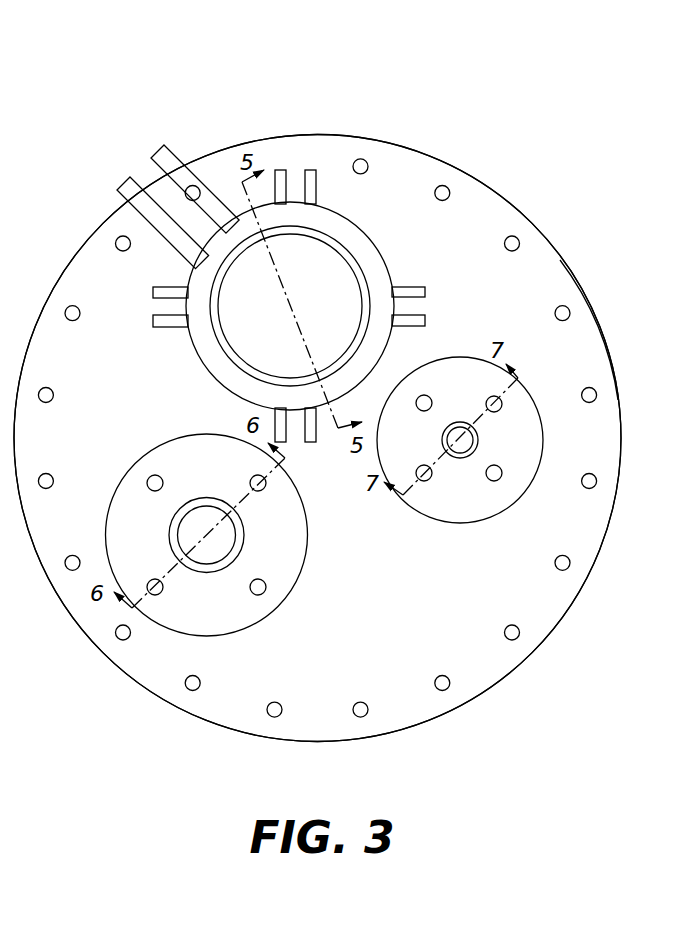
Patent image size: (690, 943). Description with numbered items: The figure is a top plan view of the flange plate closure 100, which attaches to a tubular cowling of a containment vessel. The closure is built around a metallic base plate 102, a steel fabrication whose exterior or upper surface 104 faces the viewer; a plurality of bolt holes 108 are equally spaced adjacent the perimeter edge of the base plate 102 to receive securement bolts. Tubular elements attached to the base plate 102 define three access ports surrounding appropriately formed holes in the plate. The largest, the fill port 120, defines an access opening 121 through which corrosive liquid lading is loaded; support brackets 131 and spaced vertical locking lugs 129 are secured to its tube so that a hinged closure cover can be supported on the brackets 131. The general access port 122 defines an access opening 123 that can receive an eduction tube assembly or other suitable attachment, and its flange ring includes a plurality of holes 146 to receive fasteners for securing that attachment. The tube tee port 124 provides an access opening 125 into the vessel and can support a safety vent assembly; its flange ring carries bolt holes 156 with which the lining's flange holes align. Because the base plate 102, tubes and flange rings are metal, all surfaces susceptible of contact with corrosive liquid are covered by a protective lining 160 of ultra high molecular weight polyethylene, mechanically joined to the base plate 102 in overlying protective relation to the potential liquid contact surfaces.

The flange plate closure 100 is at (548, 184).
The base plate 102 is at (617, 393).
The exterior or upper surface 104 is at (583, 333).
The bolt holes 108 is at (571, 567).
The fill port 120 is at (363, 214).
The access opening 121 is at (298, 262).
The general access port 122 is at (166, 637).
The access opening 123 is at (192, 532).
The tube tee port 124 is at (548, 443).
The access opening 125 is at (457, 436).
The vertical locking lugs 129 is at (170, 328).
The support brackets 131 is at (199, 193).
The holes 146 is at (264, 588).
The bolt holes 156 is at (492, 481).
The protective lining 160 is at (200, 284).